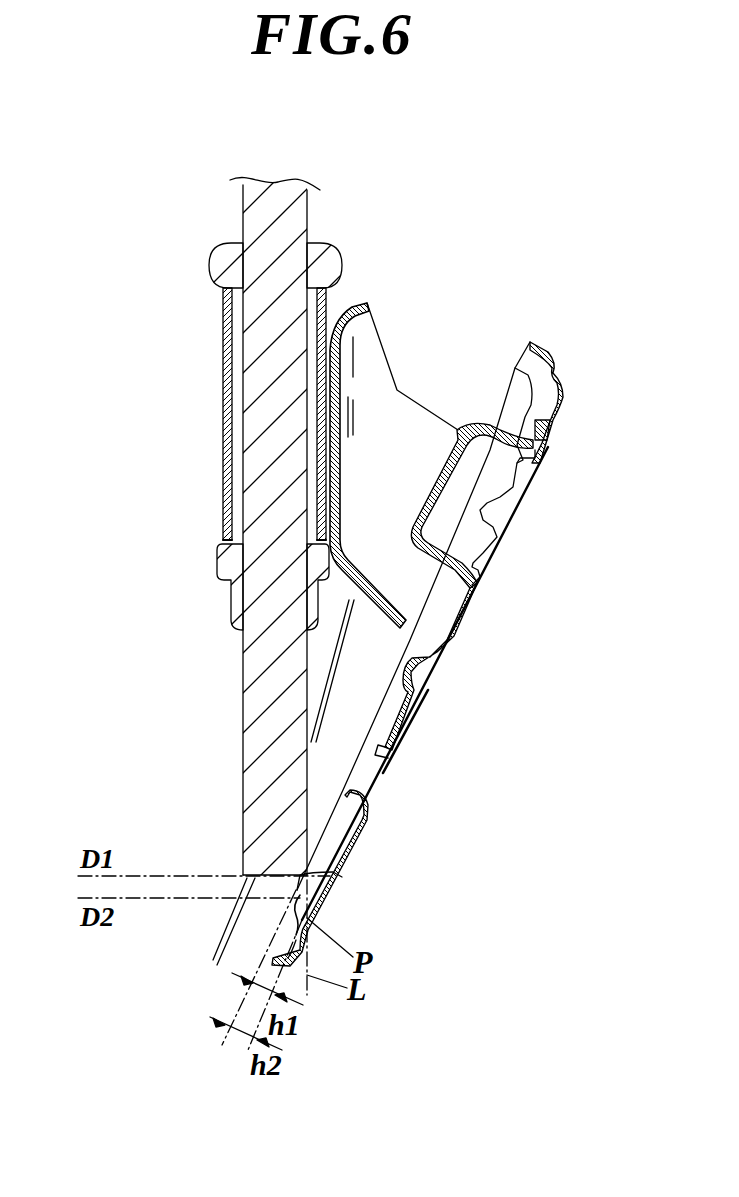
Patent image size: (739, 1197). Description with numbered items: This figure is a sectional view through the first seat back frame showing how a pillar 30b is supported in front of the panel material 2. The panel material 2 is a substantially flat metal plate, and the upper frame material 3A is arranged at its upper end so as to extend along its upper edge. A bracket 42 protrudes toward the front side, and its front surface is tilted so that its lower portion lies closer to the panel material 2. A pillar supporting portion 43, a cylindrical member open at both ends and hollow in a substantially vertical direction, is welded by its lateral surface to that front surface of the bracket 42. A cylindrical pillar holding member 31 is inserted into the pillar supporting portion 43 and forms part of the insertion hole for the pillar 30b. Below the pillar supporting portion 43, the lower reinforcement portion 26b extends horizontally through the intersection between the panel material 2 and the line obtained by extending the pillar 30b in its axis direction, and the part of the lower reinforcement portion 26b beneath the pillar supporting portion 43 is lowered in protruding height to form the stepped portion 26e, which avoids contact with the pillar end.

The panel material 2 is at (546, 450).
The upper frame material 3A is at (505, 440).
The lower reinforcement portion 26b is at (300, 890).
The stepped portion 26e is at (295, 905).
The pillar 30b is at (243, 700).
The pillar holding member 31 is at (240, 280).
The bracket 42 is at (367, 357).
The pillar supporting portion 43 is at (222, 377).